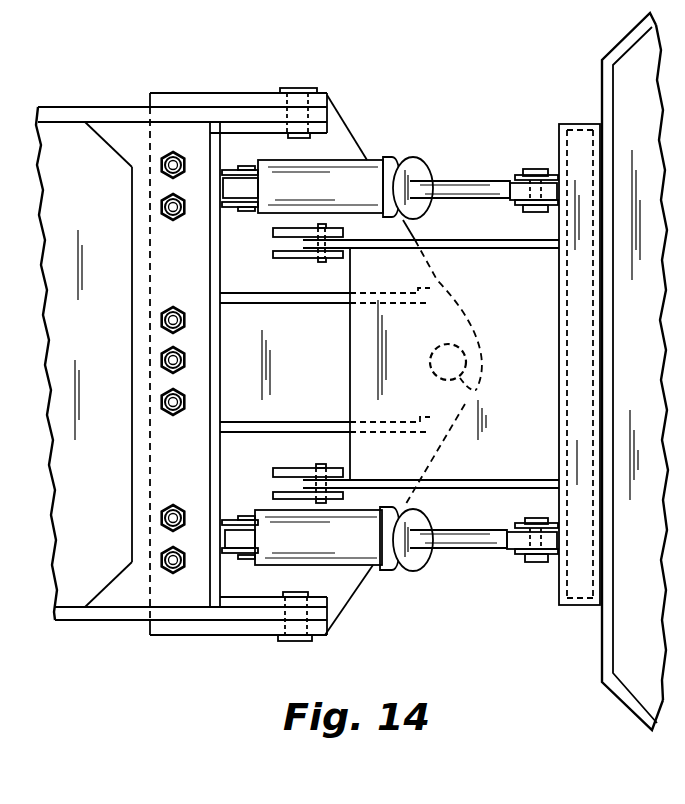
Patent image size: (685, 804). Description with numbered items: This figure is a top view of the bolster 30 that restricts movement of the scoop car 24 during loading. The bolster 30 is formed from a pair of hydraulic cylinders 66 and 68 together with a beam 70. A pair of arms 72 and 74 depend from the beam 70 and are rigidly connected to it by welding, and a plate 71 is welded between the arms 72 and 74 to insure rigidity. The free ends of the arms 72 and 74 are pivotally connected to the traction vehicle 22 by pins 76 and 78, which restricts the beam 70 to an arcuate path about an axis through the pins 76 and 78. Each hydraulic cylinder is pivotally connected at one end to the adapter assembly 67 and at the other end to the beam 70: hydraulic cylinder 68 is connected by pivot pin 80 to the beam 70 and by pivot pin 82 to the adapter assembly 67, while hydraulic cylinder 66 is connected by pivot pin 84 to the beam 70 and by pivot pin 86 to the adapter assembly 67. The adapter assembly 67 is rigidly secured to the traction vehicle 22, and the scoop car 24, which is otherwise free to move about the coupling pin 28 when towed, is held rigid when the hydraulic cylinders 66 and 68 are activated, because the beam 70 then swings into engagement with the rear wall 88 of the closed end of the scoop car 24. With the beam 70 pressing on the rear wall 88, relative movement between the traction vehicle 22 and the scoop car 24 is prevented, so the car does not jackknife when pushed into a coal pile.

The traction vehicle 22 is at (107, 107).
The scoop car 24 is at (603, 58).
The coupling pin 28 is at (473, 388).
The bolster assembly 30 is at (540, 356).
The hydraulic cylinder 66 is at (382, 566).
The adapter assembly 67 is at (345, 122).
The hydraulic cylinder 68 is at (375, 166).
The beam 70 is at (582, 123).
The plate 71 is at (495, 294).
The arm 72 is at (535, 249).
The arm 74 is at (505, 480).
The pin 76 is at (322, 262).
The pin 78 is at (327, 457).
The pivot pin 80 is at (537, 168).
The pivot pin 82 is at (247, 168).
The pivot pin 84 is at (532, 563).
The pivot pin 86 is at (240, 517).
The rear wall 88 is at (603, 632).